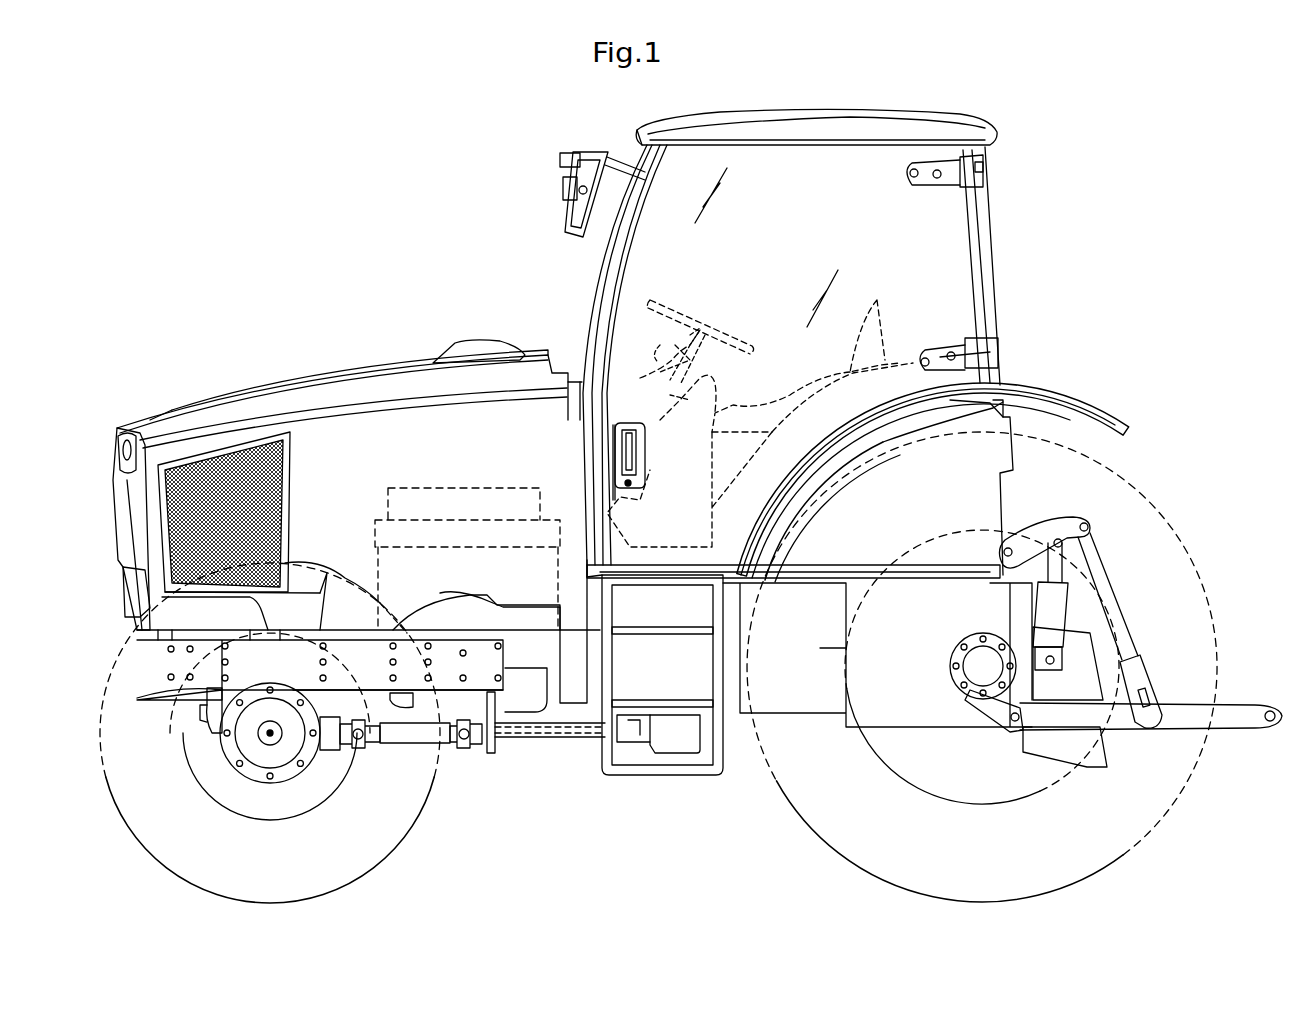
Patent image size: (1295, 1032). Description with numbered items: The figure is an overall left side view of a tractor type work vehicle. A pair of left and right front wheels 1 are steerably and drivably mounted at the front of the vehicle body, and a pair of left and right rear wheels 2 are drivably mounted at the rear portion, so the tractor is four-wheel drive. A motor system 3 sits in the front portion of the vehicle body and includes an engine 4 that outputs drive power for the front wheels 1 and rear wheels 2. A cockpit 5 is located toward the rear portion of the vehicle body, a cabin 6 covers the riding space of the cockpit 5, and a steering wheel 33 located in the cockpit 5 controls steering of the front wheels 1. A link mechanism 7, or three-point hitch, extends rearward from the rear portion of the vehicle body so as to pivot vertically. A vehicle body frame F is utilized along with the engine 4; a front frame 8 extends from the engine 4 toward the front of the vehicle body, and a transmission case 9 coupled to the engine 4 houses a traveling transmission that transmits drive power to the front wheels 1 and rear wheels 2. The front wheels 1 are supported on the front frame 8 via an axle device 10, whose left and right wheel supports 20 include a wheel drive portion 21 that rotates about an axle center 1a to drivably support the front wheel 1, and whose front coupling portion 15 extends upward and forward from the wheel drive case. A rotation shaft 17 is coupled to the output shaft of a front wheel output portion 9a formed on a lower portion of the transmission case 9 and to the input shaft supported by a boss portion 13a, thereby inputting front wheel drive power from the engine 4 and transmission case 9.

The front wheels 1 is at (177, 887).
The axle center 1a is at (280, 760).
The rear wheels 2 is at (1120, 855).
The motor system 3 is at (282, 374).
The engine 4 is at (455, 488).
The cockpit 5 is at (600, 263).
The cabin 6 is at (825, 125).
The link mechanism 7 is at (1110, 545).
The front frame 8 is at (137, 675).
The transmission case 9 is at (812, 695).
The front wheel output portion 9a is at (672, 740).
The axle device 10 is at (308, 780).
The boss portion 13a is at (274, 740).
The front coupling portion 15 is at (213, 697).
The rotation shaft 17 is at (548, 740).
The wheel supports 20 is at (218, 745).
The wheel drive portion 21 is at (265, 760).
The steering wheel 33 is at (705, 310).
The vehicle body frame F is at (413, 693).